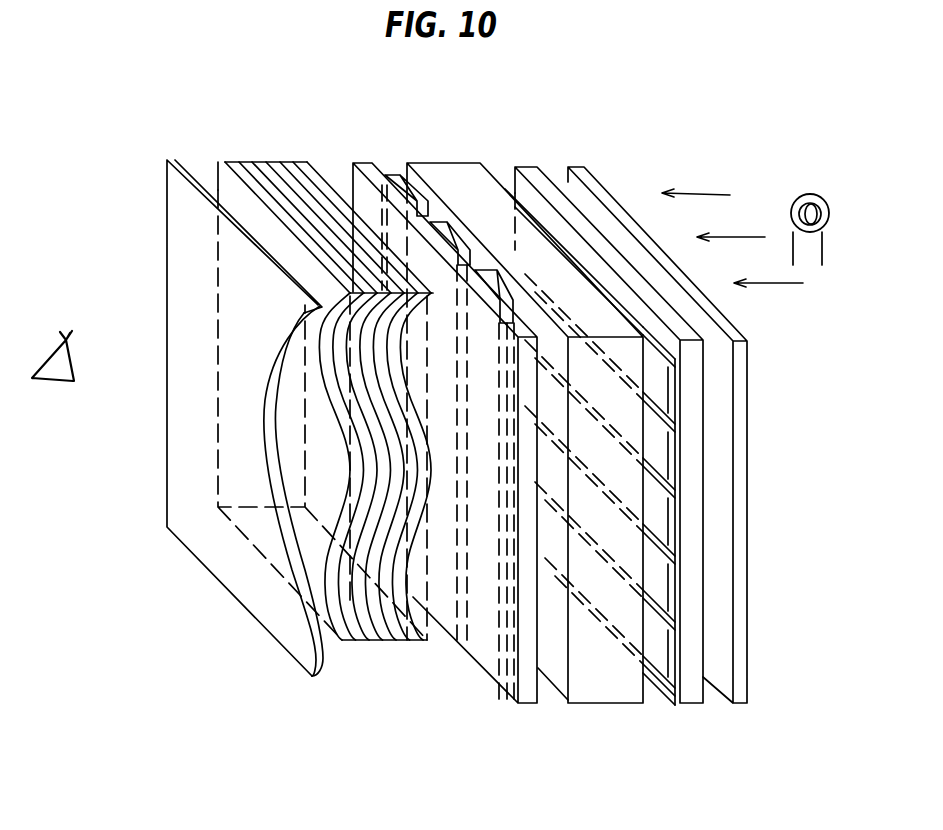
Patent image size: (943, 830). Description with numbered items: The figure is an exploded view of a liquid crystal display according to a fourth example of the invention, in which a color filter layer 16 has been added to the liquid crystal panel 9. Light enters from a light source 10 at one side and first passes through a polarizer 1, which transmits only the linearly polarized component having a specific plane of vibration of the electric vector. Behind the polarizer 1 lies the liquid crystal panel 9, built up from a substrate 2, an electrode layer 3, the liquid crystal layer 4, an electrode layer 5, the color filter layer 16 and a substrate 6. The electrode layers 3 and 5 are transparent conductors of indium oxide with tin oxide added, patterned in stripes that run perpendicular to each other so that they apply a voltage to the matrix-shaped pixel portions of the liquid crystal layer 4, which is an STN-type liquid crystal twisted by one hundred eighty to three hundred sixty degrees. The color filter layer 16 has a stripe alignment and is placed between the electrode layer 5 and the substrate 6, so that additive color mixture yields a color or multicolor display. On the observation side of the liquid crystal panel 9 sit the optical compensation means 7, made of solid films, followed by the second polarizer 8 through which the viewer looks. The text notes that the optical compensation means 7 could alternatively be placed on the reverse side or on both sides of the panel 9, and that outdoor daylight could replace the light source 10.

The polarizer 8 is at (170, 160).
The optical compensation means 7 is at (263, 160).
The substrate 6 is at (353, 163).
The liquid crystal layer 4 is at (442, 163).
The color filter layer 16 is at (502, 258).
The electrode layer 5 is at (506, 298).
The electrode layer 3 is at (660, 362).
The substrate 2 is at (513, 167).
The polarizer 1 is at (560, 167).
The light source 10 is at (808, 194).
The liquid crystal panel 9 is at (702, 717).